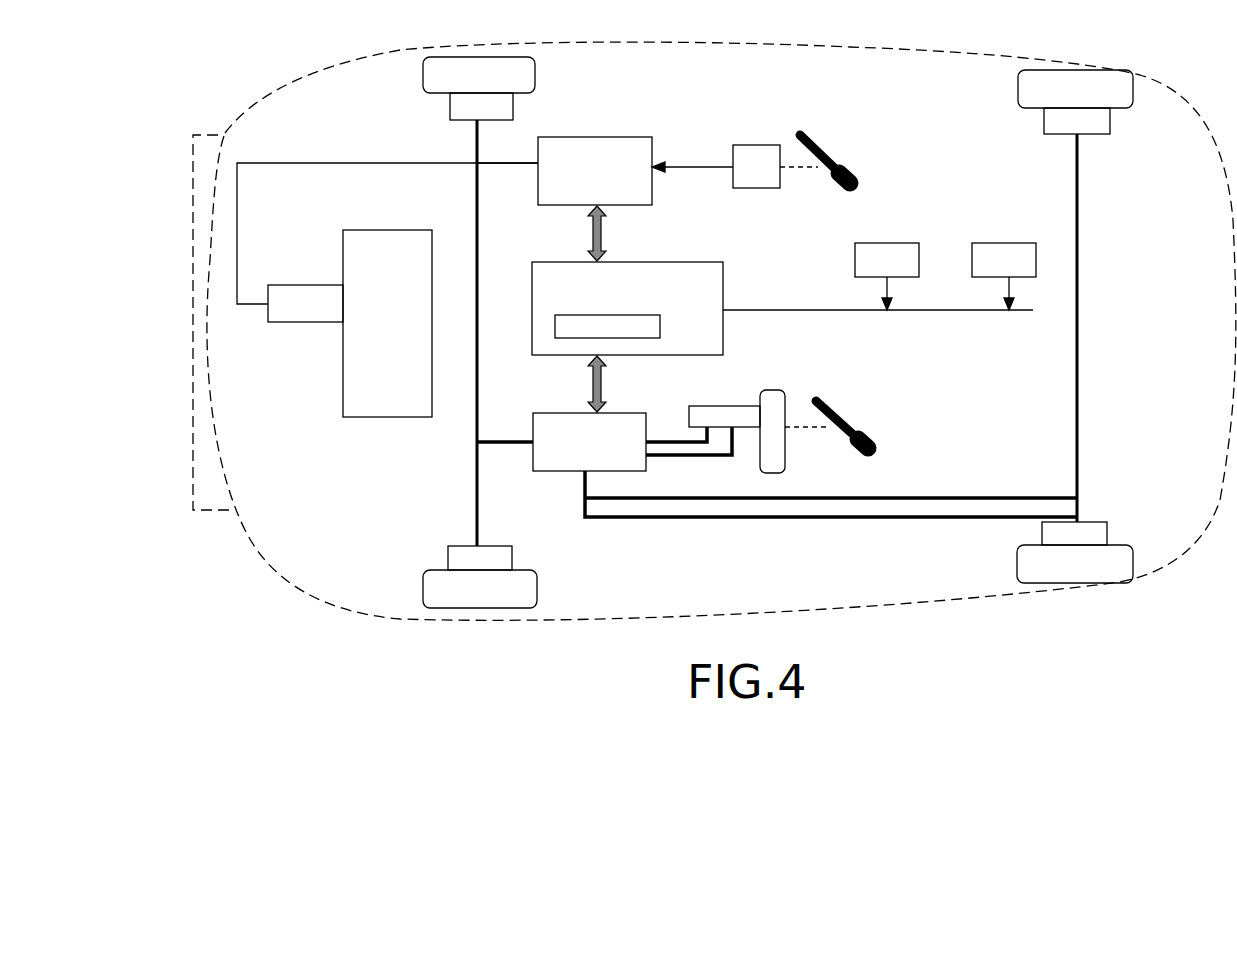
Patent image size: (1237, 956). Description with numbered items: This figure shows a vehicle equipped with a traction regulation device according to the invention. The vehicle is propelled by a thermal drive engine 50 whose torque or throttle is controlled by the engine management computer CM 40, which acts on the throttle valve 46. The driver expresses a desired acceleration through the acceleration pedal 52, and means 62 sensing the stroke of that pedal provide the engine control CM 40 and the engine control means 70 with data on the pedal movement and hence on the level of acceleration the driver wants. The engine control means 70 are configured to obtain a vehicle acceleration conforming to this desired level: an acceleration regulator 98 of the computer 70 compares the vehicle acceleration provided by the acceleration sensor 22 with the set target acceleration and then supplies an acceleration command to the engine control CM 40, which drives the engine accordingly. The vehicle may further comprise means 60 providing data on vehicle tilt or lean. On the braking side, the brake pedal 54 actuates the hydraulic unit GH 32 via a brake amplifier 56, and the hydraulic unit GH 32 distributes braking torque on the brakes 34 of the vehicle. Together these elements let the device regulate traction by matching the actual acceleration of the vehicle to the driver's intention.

The brakes 34 is at (507, 108).
The engine management computer CM 40 is at (625, 137).
The means providing data on the stroke of the acceleration pedal 62 is at (753, 152).
The acceleration pedal 52 is at (852, 168).
The means providing data on the level of acceleration of the vehicle 22 is at (898, 245).
The means providing data on vehicle tilt or lean 60 is at (1001, 245).
The engine control means 70 is at (723, 278).
The acceleration regulator 98 is at (660, 328).
The thermal drive engine 50 is at (393, 230).
The throttle valve 46 is at (315, 322).
The brake amplifier 56 is at (778, 390).
The brake pedal 54 is at (870, 438).
The hydraulic unit GH 32 is at (567, 471).